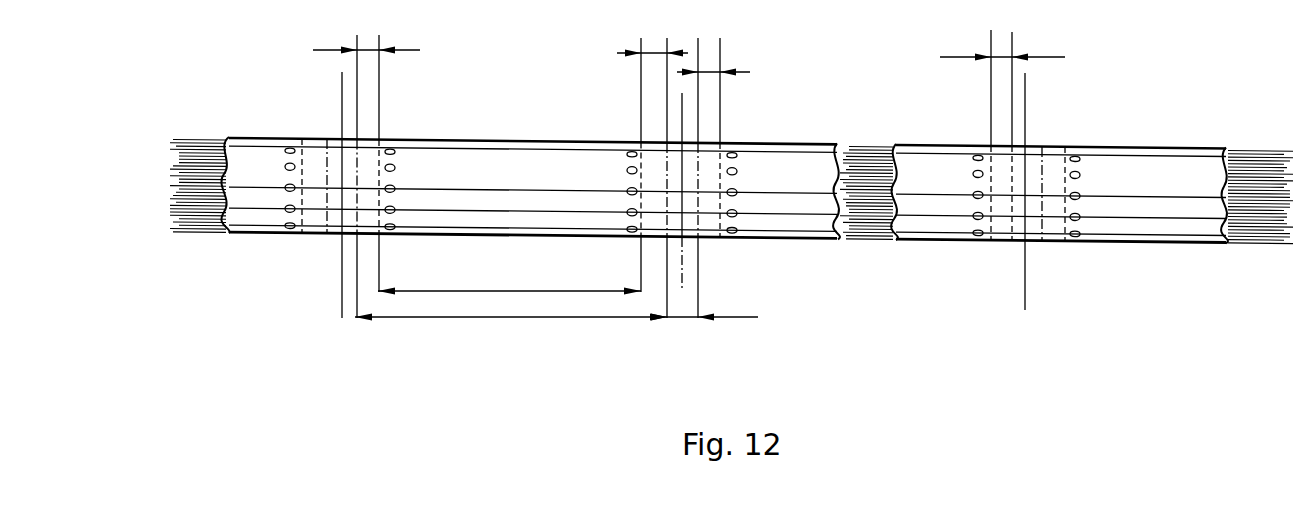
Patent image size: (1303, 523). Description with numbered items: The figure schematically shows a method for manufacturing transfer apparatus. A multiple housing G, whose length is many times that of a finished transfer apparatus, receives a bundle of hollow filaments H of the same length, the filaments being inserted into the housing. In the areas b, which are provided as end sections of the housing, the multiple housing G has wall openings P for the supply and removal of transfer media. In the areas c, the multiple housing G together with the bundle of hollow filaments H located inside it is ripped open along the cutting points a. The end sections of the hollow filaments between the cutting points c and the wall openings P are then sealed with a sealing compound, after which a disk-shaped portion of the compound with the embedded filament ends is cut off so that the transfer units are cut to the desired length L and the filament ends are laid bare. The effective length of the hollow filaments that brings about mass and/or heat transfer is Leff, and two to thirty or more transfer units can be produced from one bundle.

The cutting line a is at (338, 292).
The areas b is at (689, 52).
The areas c is at (704, 308).
The desired length L is at (511, 306).
The effective length Leff is at (509, 279).
The wall openings P is at (1078, 153).
The multiple housing G is at (1128, 148).
The bundle of hollow filaments H is at (1248, 150).